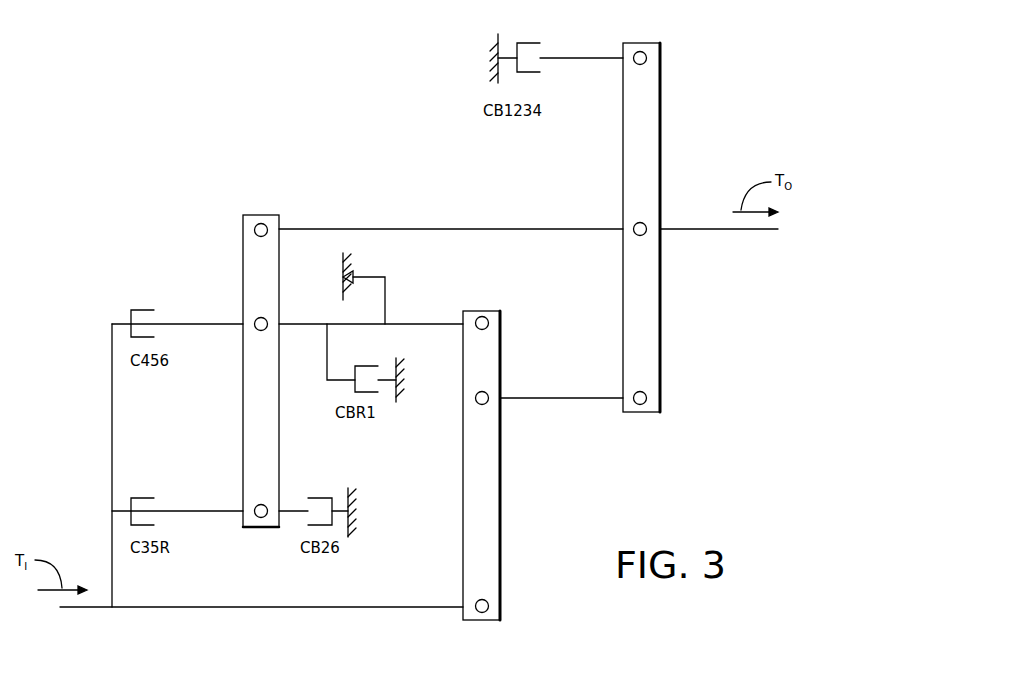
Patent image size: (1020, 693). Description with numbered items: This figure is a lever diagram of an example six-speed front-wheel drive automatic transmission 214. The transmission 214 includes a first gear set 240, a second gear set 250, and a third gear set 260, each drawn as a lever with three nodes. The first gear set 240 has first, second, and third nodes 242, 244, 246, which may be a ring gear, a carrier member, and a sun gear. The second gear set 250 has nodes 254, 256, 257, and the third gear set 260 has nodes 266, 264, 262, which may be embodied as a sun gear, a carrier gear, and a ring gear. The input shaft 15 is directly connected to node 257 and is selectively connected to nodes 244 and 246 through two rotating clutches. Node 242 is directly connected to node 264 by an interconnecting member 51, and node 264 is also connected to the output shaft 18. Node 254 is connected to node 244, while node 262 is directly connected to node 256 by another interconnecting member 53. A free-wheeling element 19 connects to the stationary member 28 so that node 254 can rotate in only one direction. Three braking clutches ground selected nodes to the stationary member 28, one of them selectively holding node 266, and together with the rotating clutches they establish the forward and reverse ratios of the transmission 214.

The transmission 214 is at (156, 157).
The first gear set 240 is at (243, 419).
The first node of first gear set 242 is at (261, 223).
The second node of first gear set 244 is at (261, 317).
The third node of first gear set 246 is at (261, 518).
The second gear set 250 is at (500, 505).
The first node of second gear set 254 is at (482, 316).
The second node of second gear set 256 is at (482, 391).
The third node of second gear set 257 is at (482, 613).
The third gear set 260 is at (660, 328).
The third node of third gear set 262 is at (641, 405).
The second node of third gear set 264 is at (641, 222).
The first node of third gear set 266 is at (640, 51).
The interconnecting member 51 is at (456, 228).
The interconnecting member 53 is at (550, 399).
The input shaft 15 is at (93, 607).
The output shaft 18 is at (718, 230).
The free-wheeling element 19 is at (357, 262).
The stationary member 28 is at (404, 398).